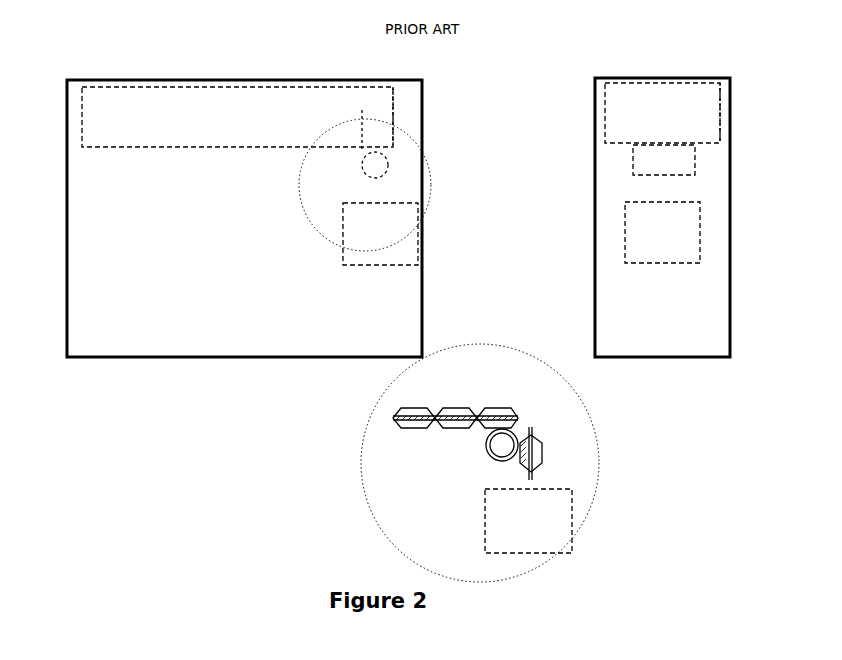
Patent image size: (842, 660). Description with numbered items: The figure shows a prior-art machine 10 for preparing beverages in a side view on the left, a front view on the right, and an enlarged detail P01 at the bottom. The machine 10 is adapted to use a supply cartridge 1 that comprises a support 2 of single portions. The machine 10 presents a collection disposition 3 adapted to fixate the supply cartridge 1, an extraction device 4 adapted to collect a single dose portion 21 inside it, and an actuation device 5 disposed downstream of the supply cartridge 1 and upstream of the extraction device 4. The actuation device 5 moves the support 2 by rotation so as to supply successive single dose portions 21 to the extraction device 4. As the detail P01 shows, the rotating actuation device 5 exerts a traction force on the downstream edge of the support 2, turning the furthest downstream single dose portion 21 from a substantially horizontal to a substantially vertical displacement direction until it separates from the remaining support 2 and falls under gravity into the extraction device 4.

The machine 10 is at (381, 205).
The supply cartridge 1 is at (347, 95).
The collection disposition 3 is at (570, 115).
The actuation device 5 is at (514, 288).
The extraction device 4 is at (534, 377).
The detail P01 is at (450, 350).
The support of single portions 2 is at (455, 411).
The single dose portion 21 is at (545, 453).